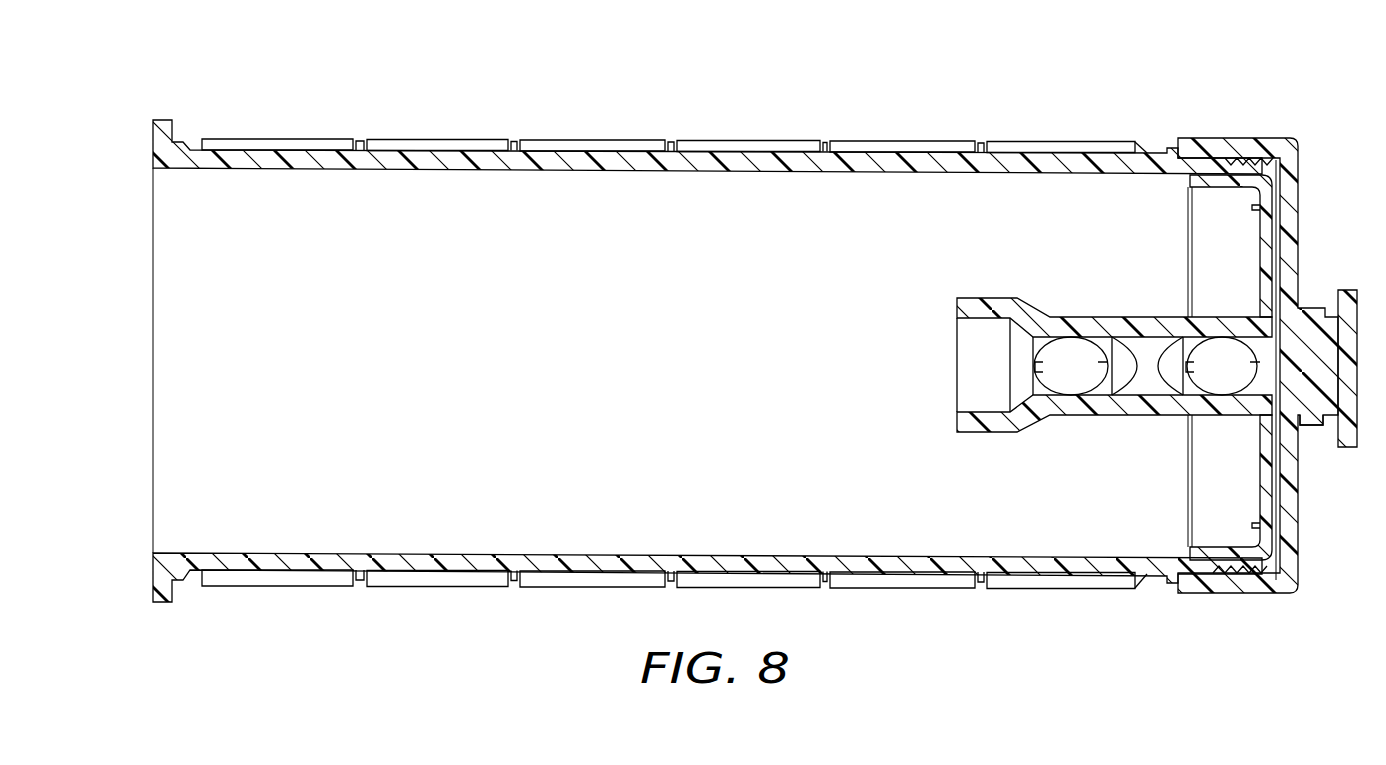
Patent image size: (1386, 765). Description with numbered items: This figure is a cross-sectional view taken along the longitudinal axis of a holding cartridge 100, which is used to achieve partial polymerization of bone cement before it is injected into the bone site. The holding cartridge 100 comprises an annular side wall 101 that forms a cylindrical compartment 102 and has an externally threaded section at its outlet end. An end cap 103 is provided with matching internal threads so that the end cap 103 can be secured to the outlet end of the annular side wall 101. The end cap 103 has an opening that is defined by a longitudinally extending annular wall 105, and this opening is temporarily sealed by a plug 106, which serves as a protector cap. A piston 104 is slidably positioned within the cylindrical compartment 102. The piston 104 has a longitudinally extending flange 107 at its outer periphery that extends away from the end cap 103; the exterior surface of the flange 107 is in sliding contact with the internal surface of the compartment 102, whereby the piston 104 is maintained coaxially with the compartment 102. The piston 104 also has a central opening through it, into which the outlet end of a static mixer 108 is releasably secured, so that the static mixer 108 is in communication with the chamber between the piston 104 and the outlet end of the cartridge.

The holding cartridge 100 is at (765, 118).
The annular side wall 101 is at (440, 140).
The cylindrical compartment 102 is at (597, 374).
The end cap 103 is at (1300, 197).
The piston 104 is at (1260, 277).
The longitudinally extending annular wall 105 is at (1326, 427).
The plug 106 is at (1350, 290).
The longitudinally extending flange 107 is at (1228, 547).
The static mixer 108 is at (1118, 318).